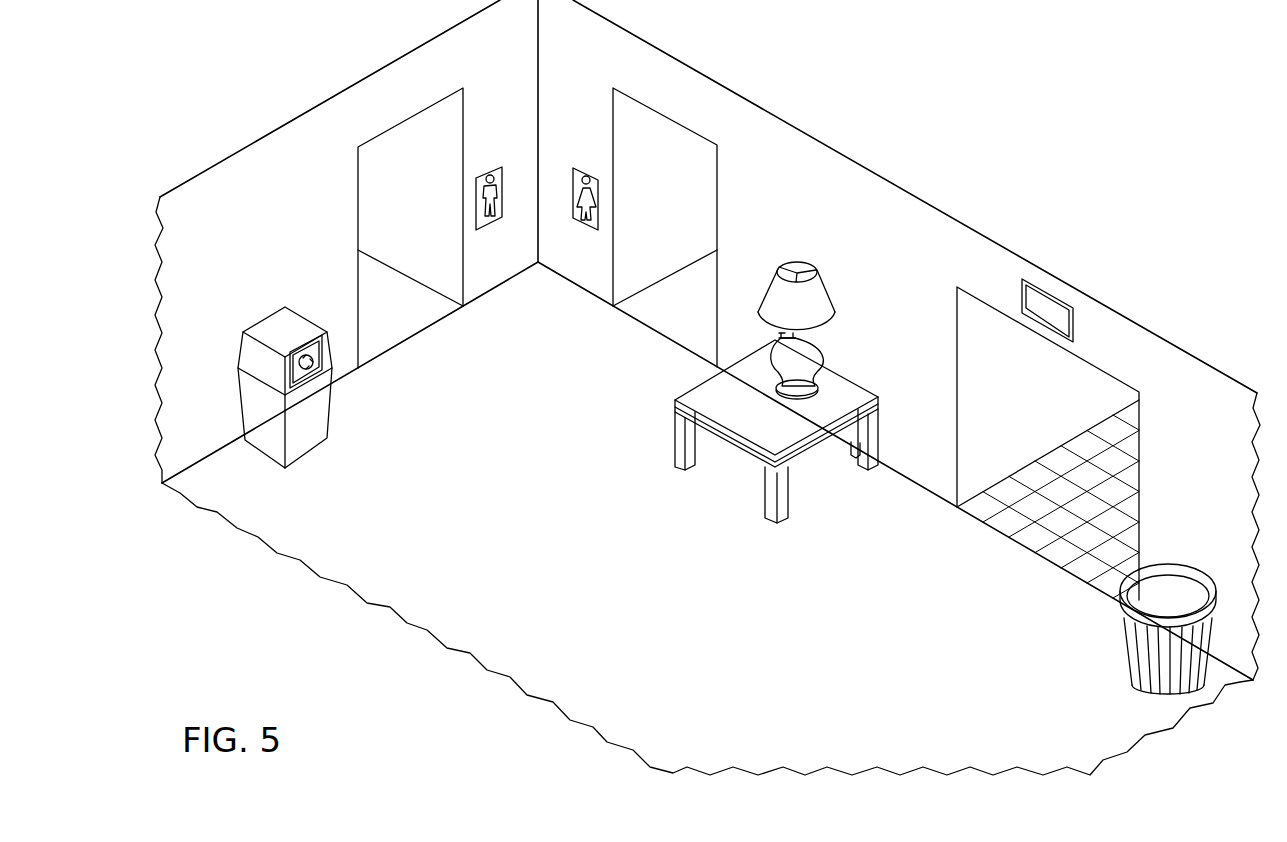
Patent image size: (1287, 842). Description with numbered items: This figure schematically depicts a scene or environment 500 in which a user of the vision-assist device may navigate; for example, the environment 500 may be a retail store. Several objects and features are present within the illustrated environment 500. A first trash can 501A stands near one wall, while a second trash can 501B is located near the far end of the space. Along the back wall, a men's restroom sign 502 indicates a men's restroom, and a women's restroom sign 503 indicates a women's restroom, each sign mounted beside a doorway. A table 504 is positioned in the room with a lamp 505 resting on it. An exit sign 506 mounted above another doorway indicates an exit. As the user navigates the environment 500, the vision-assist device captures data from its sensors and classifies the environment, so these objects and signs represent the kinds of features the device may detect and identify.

The environment 500 is at (707, 387).
The first trash can 501A is at (282, 371).
The second trash can 501B is at (1128, 629).
The men's restroom sign 502 is at (498, 149).
The women's restroom sign 503 is at (579, 149).
The table 504 is at (804, 410).
The lamp 505 is at (786, 283).
The exit sign 506 is at (1072, 275).